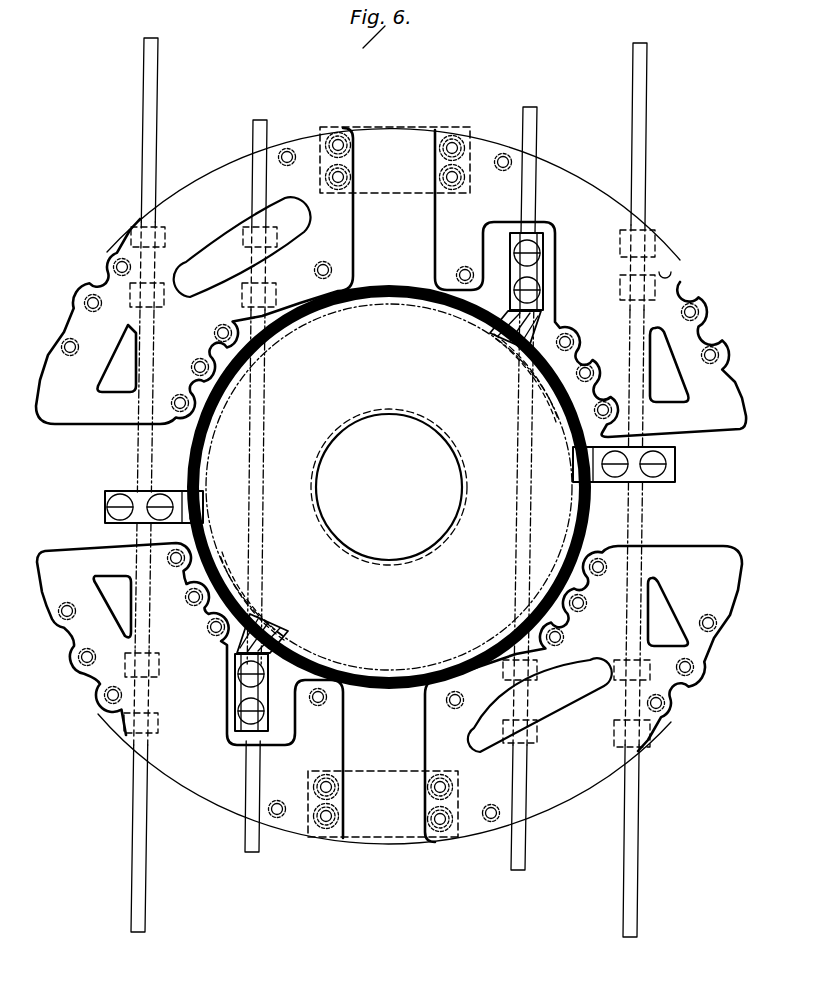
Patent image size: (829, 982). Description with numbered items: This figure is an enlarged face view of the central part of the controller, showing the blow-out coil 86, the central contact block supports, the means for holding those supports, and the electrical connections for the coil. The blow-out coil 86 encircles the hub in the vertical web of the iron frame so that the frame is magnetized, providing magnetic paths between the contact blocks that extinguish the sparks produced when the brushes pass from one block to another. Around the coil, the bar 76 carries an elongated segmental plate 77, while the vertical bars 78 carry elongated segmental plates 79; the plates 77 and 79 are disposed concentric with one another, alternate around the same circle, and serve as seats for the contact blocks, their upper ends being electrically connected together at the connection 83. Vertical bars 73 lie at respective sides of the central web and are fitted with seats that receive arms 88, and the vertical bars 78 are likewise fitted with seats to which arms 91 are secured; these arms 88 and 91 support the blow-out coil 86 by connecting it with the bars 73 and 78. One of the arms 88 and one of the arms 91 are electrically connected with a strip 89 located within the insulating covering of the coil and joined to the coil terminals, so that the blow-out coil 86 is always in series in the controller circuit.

The vertical bar 73 is at (255, 125).
The bar 76 is at (160, 265).
The elongated segmental plate 77 is at (389, 485).
The vertical bar 78 is at (647, 112).
The elongated segmental plate 79 is at (391, 484).
The electrical connection 83 is at (416, 128).
The blow-out coil 86 is at (389, 486).
The arm 88 is at (502, 343).
The strip 89 is at (556, 423).
The arm 91 is at (204, 505).